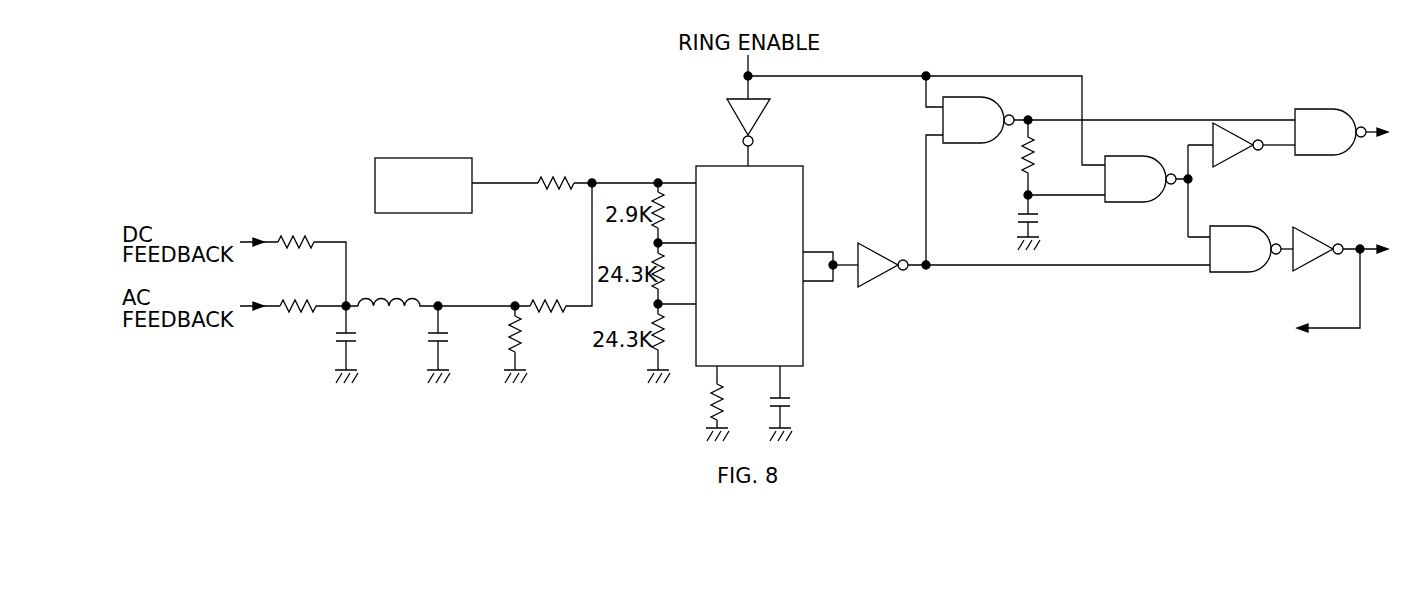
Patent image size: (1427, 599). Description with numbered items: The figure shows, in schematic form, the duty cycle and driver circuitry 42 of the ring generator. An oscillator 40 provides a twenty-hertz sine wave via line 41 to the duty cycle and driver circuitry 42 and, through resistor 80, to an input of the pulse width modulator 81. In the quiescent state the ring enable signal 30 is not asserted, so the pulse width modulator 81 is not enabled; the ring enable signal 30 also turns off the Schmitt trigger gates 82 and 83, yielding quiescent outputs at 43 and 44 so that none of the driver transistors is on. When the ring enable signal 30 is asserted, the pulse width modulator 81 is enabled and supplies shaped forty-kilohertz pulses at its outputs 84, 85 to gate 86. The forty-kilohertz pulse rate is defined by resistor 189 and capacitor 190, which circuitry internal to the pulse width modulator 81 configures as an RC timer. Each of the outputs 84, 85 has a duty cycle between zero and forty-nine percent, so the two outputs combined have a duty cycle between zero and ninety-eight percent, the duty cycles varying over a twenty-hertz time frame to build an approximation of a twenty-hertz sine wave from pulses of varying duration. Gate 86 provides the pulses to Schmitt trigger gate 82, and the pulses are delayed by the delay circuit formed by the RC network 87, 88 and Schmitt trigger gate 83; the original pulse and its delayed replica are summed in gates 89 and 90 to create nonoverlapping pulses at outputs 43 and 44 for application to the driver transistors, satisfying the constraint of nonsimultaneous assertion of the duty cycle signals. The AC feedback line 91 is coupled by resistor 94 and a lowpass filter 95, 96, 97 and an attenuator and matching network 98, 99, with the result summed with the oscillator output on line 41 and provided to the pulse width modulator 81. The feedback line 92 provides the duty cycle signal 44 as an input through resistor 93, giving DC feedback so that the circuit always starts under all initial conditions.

The ring enable signal 30 is at (742, 70).
The oscillator 40 is at (423, 157).
The line 41 is at (490, 182).
The duty cycle and driver circuitry 42 is at (938, 41).
The output 43 is at (1372, 122).
The output 44 is at (1363, 242).
The resistor 80 is at (557, 190).
The pulse width modulator 81 is at (773, 163).
The Schmitt trigger gate 82 is at (942, 120).
The Schmitt trigger gate 83 is at (1133, 203).
The output 84 is at (818, 250).
The output 85 is at (823, 283).
The gate 86 is at (877, 243).
The resistor of RC network 87 is at (1023, 160).
The capacitor of RC network 88 is at (1018, 220).
The gate 89 is at (1322, 108).
The gate 90 is at (1238, 226).
The AC feedback line 91 is at (250, 305).
The feedback line 92 is at (250, 241).
The resistor 93 is at (292, 247).
The resistor 94 is at (297, 312).
The lowpass filter capacitor 95 is at (333, 345).
The lowpass filter inductor 96 is at (421, 298).
The lowpass filter capacitor 97 is at (428, 342).
The attenuator and matching network resistor 98 is at (523, 347).
The attenuator and matching network resistor 99 is at (527, 294).
The resistor 189 is at (710, 407).
The capacitor 190 is at (783, 408).